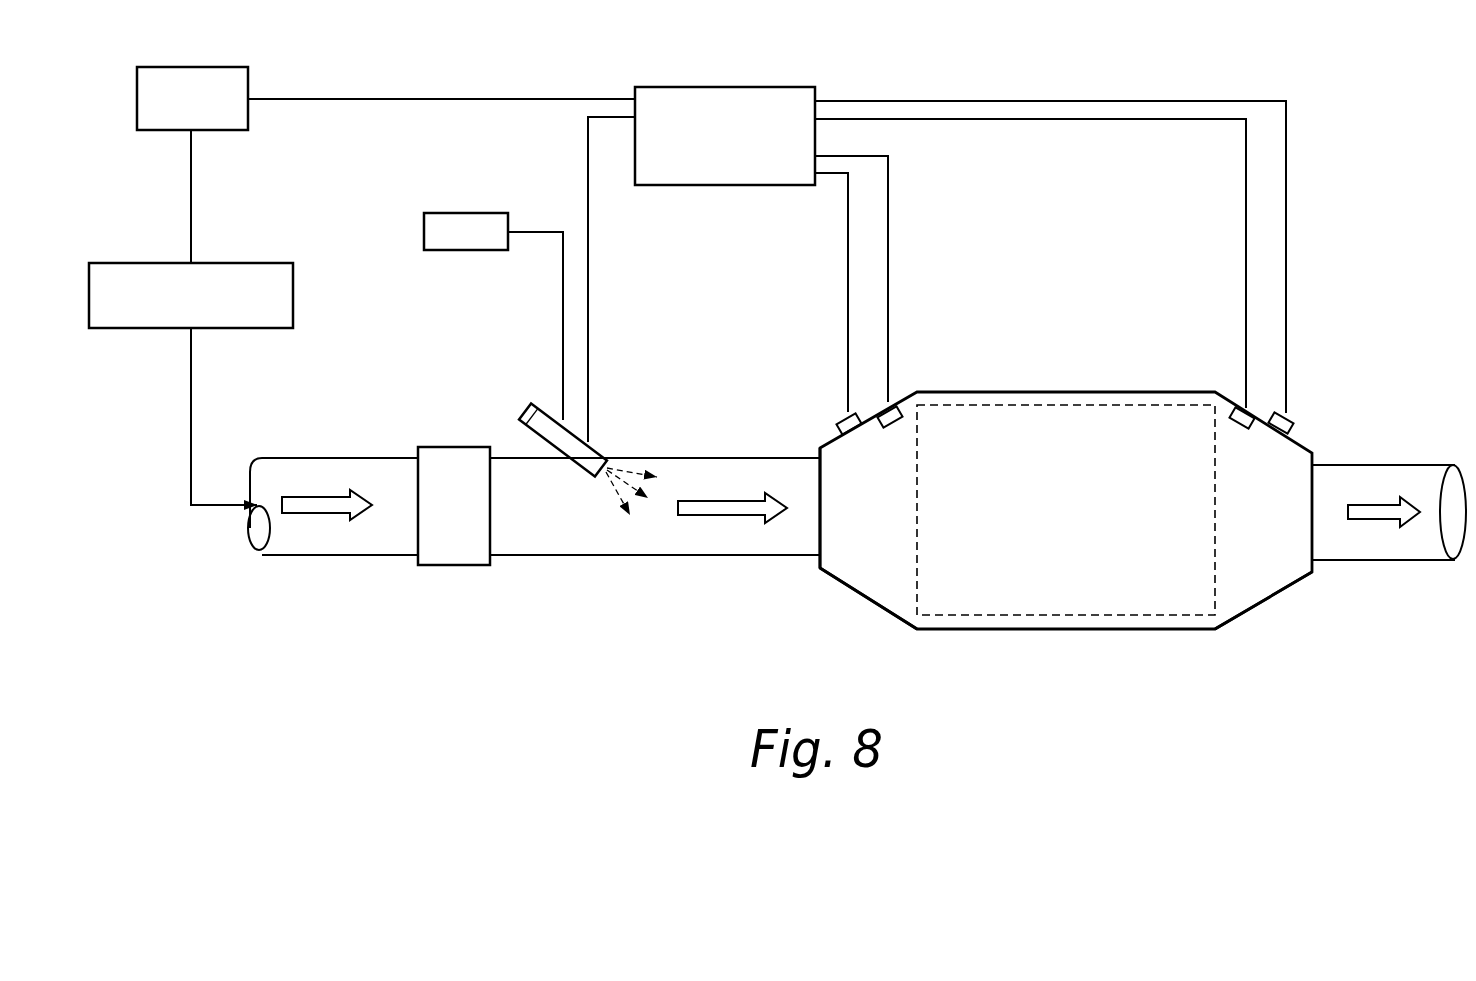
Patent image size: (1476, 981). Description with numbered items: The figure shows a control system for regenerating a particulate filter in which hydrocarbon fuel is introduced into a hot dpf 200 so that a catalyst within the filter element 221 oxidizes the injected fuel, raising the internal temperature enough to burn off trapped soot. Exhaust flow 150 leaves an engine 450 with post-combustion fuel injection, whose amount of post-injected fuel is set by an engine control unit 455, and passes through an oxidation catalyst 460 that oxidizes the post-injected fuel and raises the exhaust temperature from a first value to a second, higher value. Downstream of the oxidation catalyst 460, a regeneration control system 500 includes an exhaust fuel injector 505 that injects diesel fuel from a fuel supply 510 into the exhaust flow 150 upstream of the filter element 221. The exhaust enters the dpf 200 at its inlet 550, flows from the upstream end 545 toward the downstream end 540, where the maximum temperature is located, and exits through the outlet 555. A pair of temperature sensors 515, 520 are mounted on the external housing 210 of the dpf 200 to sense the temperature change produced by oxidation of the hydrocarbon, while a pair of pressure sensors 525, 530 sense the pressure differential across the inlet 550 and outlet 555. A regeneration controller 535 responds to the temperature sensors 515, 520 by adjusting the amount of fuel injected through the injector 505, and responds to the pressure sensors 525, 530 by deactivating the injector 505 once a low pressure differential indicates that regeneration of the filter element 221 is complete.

The engine control unit 455 is at (192, 67).
The engine with post-combustion fuel injection 450 is at (229, 263).
The regeneration controller 535 is at (748, 87).
The regeneration control system 500 is at (818, 353).
The fuel supply 510 is at (477, 250).
The exhaust fuel injector 505 is at (523, 418).
The exhaust flow 150 is at (718, 515).
The oxidation catalyst 460 is at (457, 565).
The dpf 200 is at (1061, 527).
The external housing 210 is at (1060, 392).
The filter element 221 is at (1072, 617).
The upstream end 545 is at (860, 585).
The downstream end 540 is at (1278, 588).
The inlet 550 is at (818, 510).
The outlet 555 is at (1312, 512).
The temperature sensor 515 is at (838, 432).
The pressure sensor 525 is at (895, 425).
The pressure sensor 530 is at (1237, 425).
The temperature sensor 520 is at (1292, 433).